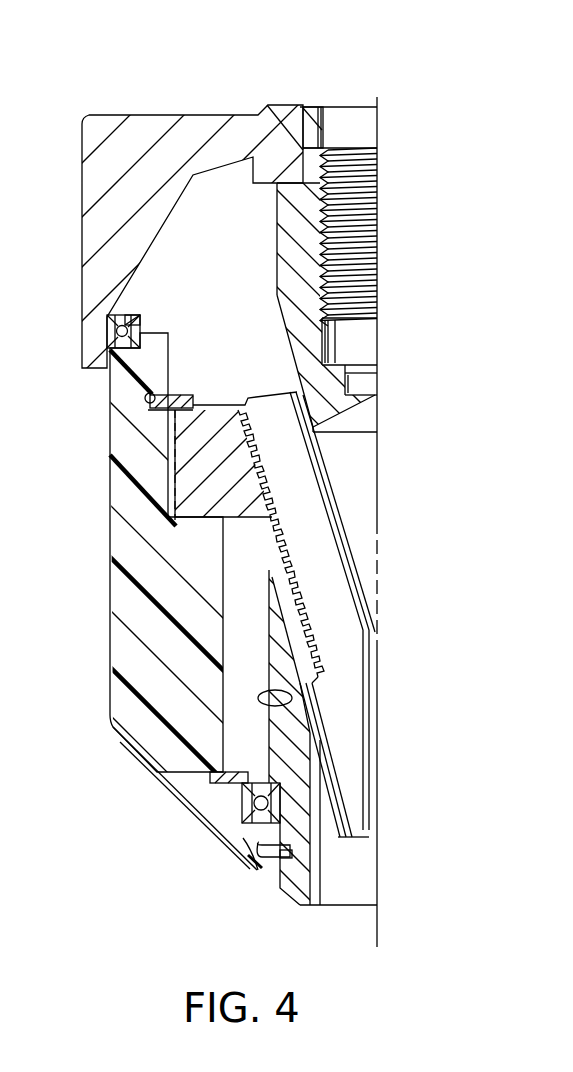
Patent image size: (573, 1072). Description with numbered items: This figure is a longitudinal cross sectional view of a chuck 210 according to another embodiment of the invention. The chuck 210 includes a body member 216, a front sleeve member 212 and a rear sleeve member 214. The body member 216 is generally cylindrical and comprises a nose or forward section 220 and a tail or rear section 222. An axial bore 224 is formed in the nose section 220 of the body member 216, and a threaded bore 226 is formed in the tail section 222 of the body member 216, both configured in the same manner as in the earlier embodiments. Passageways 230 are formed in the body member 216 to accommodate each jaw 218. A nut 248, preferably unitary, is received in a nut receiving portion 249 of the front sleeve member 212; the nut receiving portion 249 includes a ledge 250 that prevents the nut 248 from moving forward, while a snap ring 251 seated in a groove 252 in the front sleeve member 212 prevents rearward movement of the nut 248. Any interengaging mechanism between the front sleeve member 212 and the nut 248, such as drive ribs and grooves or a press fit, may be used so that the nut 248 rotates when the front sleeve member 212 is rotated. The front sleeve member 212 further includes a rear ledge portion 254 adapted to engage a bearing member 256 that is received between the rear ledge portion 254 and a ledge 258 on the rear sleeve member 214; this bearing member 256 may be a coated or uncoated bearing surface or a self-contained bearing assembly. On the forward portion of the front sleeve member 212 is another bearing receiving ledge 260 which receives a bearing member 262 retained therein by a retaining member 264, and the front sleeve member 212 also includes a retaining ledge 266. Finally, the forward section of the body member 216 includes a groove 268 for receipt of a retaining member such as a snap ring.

The chuck 210 is at (345, 56).
The front sleeve member 212 is at (118, 740).
The rear sleeve member 214 is at (87, 128).
The body member 216 is at (278, 303).
The jaw 218 is at (328, 550).
The nose section 220 is at (292, 700).
The tail section 222 is at (277, 228).
The axial bore 224 is at (320, 905).
The threaded bore 226 is at (333, 135).
The passageways 230 is at (300, 648).
The nut 248 is at (222, 405).
The nut receiving portion 249 is at (175, 480).
The ledge 250 is at (205, 520).
The snap ring 251 is at (160, 412).
The groove 252 is at (160, 383).
The rear ledge portion 254 is at (118, 372).
The bearing member 256 is at (133, 318).
The ledge 258 is at (113, 318).
The bearing receiving ledge 260 is at (245, 857).
The bearing member 262 is at (218, 810).
The retaining member 264 is at (225, 780).
The retaining ledge 266 is at (252, 863).
The groove 268 is at (305, 858).